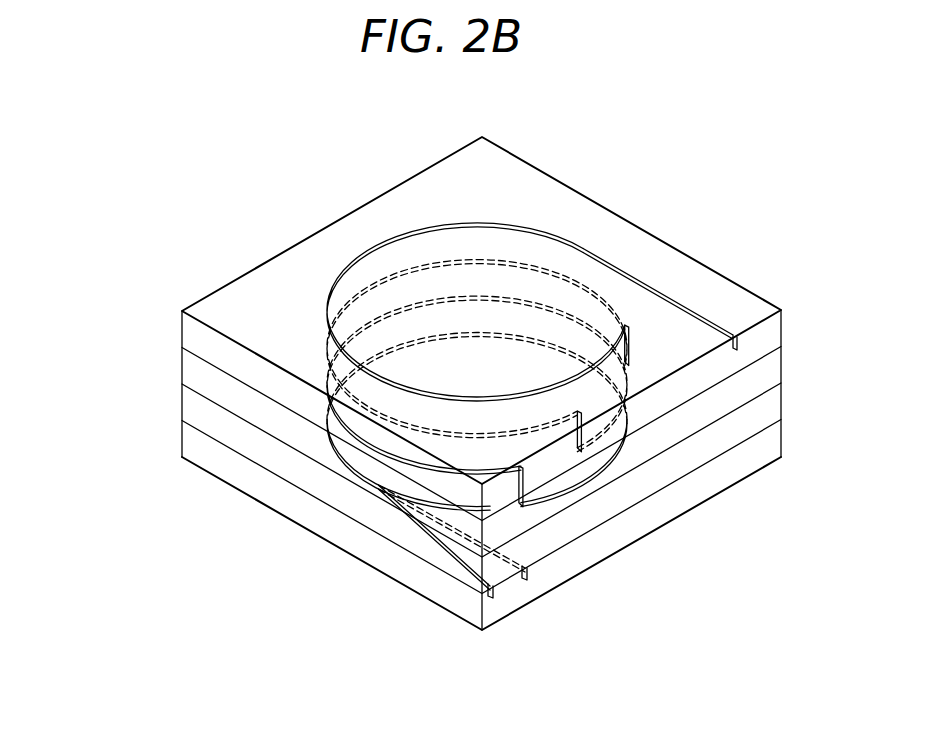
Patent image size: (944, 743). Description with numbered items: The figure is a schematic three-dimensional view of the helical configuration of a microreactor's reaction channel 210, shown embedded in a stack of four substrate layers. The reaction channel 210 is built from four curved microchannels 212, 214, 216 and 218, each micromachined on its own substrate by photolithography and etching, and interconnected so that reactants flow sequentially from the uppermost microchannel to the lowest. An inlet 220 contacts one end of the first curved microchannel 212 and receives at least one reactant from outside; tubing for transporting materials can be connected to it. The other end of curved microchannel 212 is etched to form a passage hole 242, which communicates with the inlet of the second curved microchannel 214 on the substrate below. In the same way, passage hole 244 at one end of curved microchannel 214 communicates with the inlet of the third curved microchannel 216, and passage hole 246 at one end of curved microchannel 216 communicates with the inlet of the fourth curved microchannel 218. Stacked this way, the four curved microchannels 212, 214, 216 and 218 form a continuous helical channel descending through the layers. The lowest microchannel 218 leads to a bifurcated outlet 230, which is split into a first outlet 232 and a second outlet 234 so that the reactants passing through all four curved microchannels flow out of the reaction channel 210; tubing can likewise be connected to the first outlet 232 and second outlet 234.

The reaction channel 210 is at (326, 367).
The curved microchannel 212 is at (311, 300).
The curved microchannel 214 is at (311, 348).
The curved microchannel 216 is at (311, 385).
The curved microchannel 218 is at (311, 421).
The inlet 220 is at (737, 343).
The bifurcated outlet 230 is at (496, 598).
The first outlet 232 is at (527, 573).
The second outlet 234 is at (493, 597).
The passage hole 242 is at (630, 350).
The passage hole 244 is at (583, 433).
The passage hole 246 is at (524, 487).